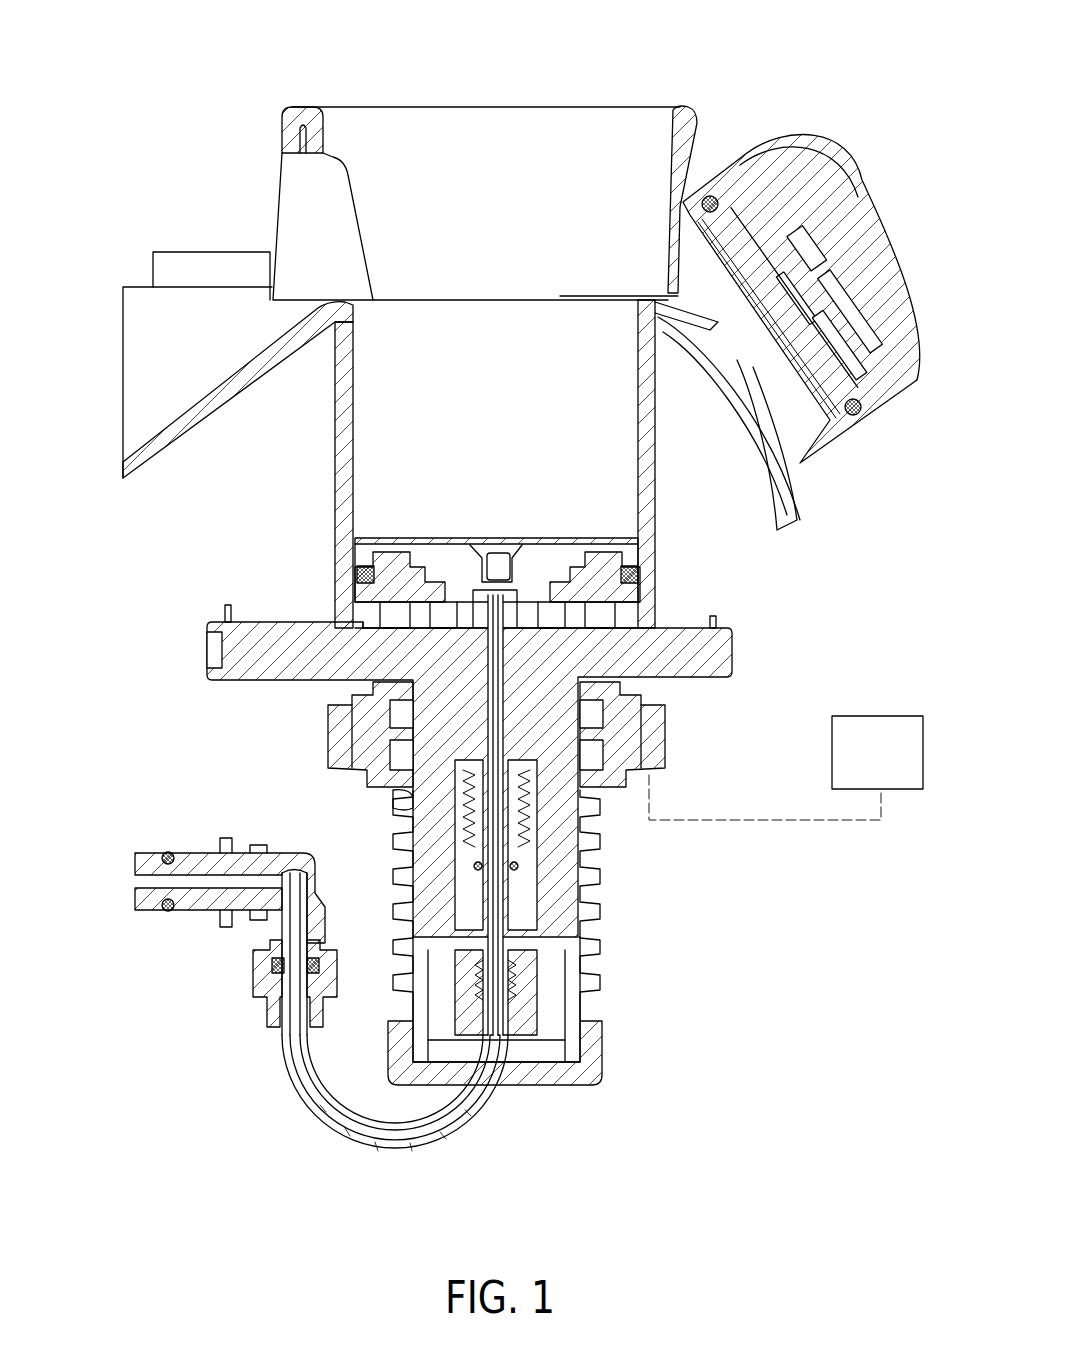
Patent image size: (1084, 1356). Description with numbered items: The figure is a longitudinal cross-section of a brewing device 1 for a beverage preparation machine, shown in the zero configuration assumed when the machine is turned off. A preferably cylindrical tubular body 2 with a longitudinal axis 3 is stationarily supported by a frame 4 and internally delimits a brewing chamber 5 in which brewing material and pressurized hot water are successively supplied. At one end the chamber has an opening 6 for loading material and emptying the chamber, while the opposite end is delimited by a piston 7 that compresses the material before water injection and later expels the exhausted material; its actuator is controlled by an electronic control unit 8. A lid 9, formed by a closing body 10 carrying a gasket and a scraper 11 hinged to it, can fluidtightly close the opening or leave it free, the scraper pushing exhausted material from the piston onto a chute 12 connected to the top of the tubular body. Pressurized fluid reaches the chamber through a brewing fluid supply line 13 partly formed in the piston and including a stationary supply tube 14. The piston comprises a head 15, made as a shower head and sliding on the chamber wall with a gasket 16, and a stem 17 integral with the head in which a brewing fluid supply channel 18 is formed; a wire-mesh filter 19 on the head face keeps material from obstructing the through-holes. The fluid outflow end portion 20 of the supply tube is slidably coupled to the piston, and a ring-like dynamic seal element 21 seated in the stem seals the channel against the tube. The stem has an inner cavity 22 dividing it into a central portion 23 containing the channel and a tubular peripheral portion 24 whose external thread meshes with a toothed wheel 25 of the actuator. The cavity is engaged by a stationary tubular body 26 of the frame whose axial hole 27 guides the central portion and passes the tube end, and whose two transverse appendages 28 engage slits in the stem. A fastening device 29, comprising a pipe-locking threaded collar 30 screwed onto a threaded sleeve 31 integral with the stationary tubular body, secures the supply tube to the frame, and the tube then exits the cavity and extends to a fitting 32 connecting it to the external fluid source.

The brewing device 1 is at (156, 104).
The tubular body 2 is at (345, 437).
The longitudinal axis 3 is at (492, 22).
The frame 4 is at (700, 688).
The brewing chamber 5 is at (406, 323).
The opening 6 is at (624, 306).
The piston 7 is at (604, 831).
The electronic control unit 8 is at (888, 732).
The lid 9 is at (758, 132).
The closing body 10 is at (862, 381).
The scraper 11 is at (657, 128).
The chute 12 is at (200, 398).
The brewing fluid supply line 13 is at (390, 1156).
The supply tube 14 is at (305, 1108).
The head 15 is at (522, 538).
The gasket 16 is at (348, 572).
The stem 17 is at (386, 812).
The brewing fluid supply channel 18 is at (720, 597).
The filter 19 is at (440, 535).
The fluid outflow end portion 20 is at (600, 892).
The dynamic seal element 21 is at (456, 843).
The inner cavity 22 is at (560, 990).
The central portion 23 is at (635, 605).
The tubular peripheral portion 24 is at (600, 932).
The toothed wheel 25 is at (660, 743).
The stationary tubular body 26 is at (413, 790).
The axial hole 27 is at (372, 735).
The transverse appendages 28 is at (210, 642).
The fastening device 29 is at (542, 1038).
The pipe-locking threaded collar 30 is at (455, 1050).
The threaded sleeve 31 is at (445, 990).
The fitting 32 is at (193, 905).